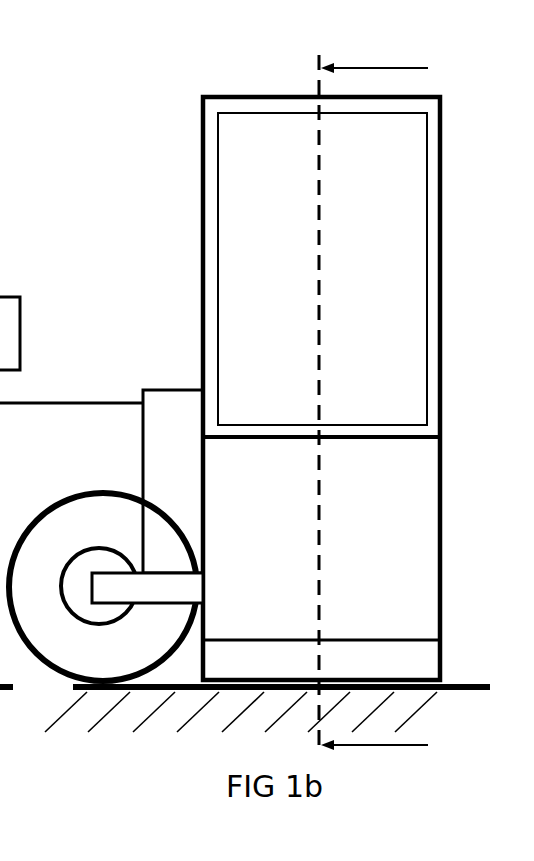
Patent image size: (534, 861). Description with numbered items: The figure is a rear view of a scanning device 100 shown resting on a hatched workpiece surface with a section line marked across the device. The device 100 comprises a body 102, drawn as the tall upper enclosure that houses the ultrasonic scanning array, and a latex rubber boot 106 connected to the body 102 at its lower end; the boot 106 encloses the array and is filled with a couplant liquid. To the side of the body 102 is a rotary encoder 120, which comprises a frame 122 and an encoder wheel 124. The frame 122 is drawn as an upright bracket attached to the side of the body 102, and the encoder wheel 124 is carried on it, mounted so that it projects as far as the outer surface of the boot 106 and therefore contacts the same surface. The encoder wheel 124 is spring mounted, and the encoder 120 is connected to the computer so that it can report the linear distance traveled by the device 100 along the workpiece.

The scanning device 100 is at (113, 100).
The body 102 is at (403, 259).
The latex rubber boot 106 is at (422, 660).
The rotary encoder 120 is at (95, 378).
The frame 122 is at (172, 410).
The encoder wheel 124 is at (60, 495).